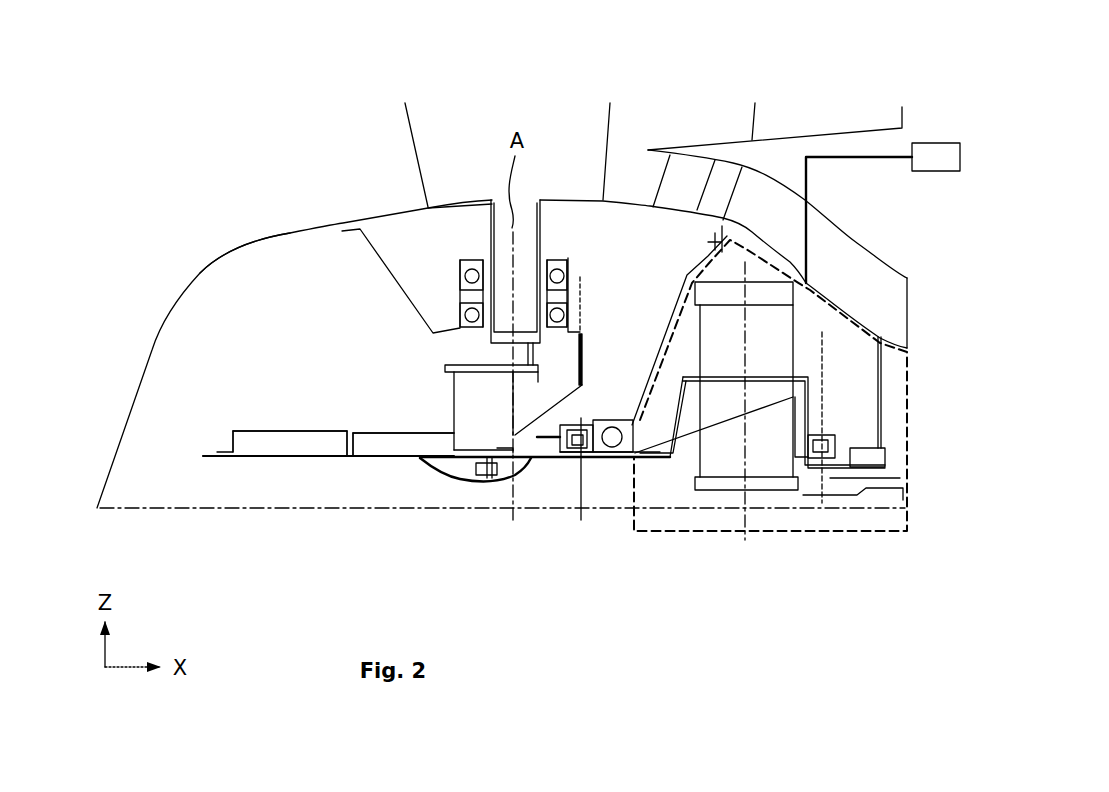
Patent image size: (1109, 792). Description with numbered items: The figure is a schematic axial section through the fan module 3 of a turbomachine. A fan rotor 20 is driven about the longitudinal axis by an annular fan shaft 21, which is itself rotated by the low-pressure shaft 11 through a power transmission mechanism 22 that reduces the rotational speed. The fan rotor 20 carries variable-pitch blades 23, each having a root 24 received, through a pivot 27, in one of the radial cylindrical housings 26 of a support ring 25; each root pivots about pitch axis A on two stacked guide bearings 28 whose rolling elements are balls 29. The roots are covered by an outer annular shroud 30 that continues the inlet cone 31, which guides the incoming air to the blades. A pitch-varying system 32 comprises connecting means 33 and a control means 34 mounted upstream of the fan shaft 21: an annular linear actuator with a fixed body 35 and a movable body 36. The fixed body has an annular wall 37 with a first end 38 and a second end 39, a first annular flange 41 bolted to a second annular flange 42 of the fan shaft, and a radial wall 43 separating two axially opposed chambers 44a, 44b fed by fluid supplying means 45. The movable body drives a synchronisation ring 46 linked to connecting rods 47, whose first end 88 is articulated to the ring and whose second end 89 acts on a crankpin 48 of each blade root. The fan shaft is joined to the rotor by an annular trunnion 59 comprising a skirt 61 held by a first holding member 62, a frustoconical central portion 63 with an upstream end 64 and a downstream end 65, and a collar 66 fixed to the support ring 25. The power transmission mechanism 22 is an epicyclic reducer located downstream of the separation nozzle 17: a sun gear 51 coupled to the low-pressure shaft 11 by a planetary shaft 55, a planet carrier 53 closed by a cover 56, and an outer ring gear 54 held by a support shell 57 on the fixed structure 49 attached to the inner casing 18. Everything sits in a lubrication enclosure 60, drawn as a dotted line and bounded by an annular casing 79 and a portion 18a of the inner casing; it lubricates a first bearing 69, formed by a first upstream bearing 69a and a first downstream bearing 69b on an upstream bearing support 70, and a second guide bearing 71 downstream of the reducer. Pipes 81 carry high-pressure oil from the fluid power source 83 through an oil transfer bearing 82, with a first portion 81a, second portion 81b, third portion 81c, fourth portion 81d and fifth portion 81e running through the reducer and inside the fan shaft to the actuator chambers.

The fan module 3 is at (368, 74).
The low-pressure shaft 11 is at (884, 490).
The separation nozzle 17 is at (732, 150).
The inner casing 18 is at (803, 315).
The portion of the inner casing 18a is at (788, 176).
The fan rotor 20 is at (290, 205).
The fan shaft 21 is at (514, 481).
The power transmission mechanism 22 is at (803, 350).
The blades 23 is at (605, 130).
The root 24 is at (560, 228).
The support ring 25 is at (457, 297).
The radial cylindrical housings 26 is at (468, 250).
The pivot 27 is at (527, 260).
The guide bearing 28 is at (575, 293).
The balls 29 is at (574, 322).
The outer annular shroud 30 is at (385, 218).
The inlet cone 31 is at (150, 352).
The pitch-varying system 32 is at (336, 381).
The connecting means 33 is at (436, 367).
The control means 34 is at (279, 463).
The fixed body 35 is at (383, 459).
The movable body 36 is at (255, 430).
The annular wall 37 is at (327, 459).
The first end 38 is at (207, 460).
The second end 39 is at (470, 480).
The first annular flange 41 is at (488, 479).
The second annular flange 42 is at (500, 478).
The radial wall 43 is at (360, 447).
The chamber 44a is at (287, 447).
The chamber 44b is at (407, 450).
The fluid supplying means 45 is at (815, 417).
The synchronisation ring 46 is at (455, 416).
The connecting rod 47 is at (465, 366).
The crankpin 48 is at (596, 347).
The fixed structure 49 is at (710, 243).
The inner planetary gear 51 is at (783, 485).
The planet carrier 53 is at (648, 455).
The outer ring gear 54 is at (744, 401).
The planetary shaft 55 is at (837, 497).
The cover 56 is at (805, 393).
The support shell 57 is at (749, 170).
The annular trunnion 59 is at (566, 401).
The lubrication enclosure 60 is at (663, 533).
The annular skirt 61 is at (544, 462).
The first holding member 62 is at (486, 449).
The central portion 63 is at (521, 432).
The upstream end 64 is at (499, 442).
The downstream end 65 is at (584, 383).
The annular collar 66 is at (594, 345).
The first bearing 69 is at (588, 522).
The first upstream bearing 69a is at (578, 522).
The first downstream bearing 69b is at (612, 427).
The upstream bearing support 70 is at (712, 240).
The second guide bearing 71 is at (847, 438).
The annular casing 79 is at (910, 384).
The pipes 81 is at (690, 377).
The first portion 81a is at (838, 484).
The second portion 81b is at (773, 436).
The third portion 81c is at (727, 385).
The fourth portion 81d is at (684, 398).
The fifth portion 81e is at (590, 482).
The oil transfer bearing 82 is at (876, 460).
The fluid power source 83 is at (936, 157).
The first end 88 is at (453, 383).
The second end 89 is at (539, 381).